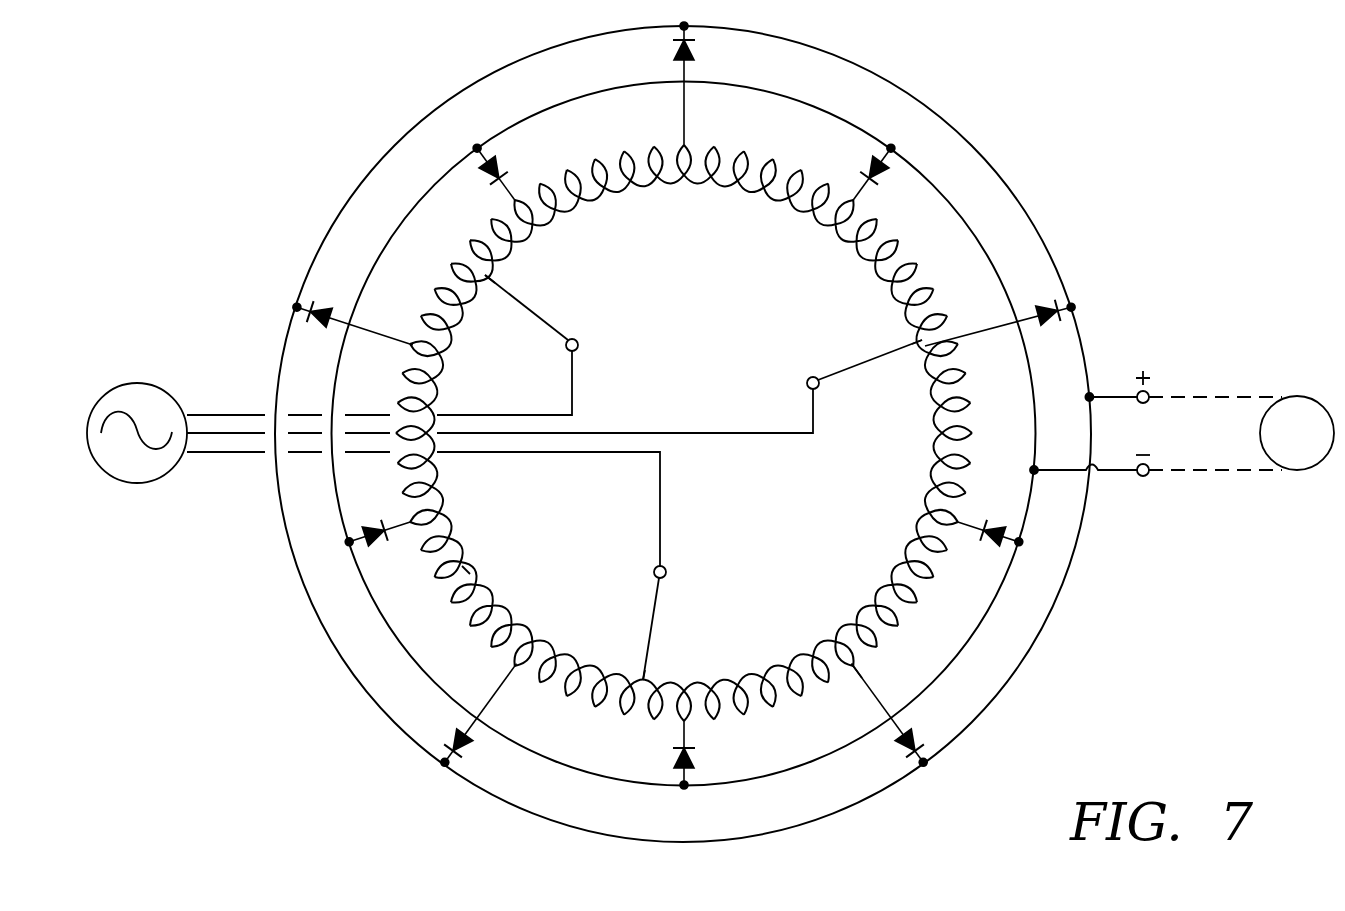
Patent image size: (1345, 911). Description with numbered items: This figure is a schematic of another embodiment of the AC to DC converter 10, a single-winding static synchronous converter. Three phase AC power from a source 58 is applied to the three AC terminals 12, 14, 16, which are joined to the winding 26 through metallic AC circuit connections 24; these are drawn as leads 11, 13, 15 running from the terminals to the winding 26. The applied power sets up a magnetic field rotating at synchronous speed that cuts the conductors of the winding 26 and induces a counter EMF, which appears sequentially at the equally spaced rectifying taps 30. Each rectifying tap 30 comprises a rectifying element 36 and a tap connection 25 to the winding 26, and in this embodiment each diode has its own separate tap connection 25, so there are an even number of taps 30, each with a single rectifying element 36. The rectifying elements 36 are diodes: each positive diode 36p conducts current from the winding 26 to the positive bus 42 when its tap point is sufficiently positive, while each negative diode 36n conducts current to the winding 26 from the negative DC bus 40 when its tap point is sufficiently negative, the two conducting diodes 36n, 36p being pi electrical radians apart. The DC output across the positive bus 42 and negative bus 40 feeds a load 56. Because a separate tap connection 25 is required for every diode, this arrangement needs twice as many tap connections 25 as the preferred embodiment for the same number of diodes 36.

The AC to DC converter 10 is at (455, 818).
The first tap lead 11 is at (545, 312).
The AC terminal 12 is at (580, 345).
The second tap lead 13 is at (870, 345).
The AC terminal 14 is at (820, 390).
The third tap lead 15 is at (645, 630).
The AC terminal 16 is at (656, 568).
The AC circuit connection 24 is at (487, 278).
The tap connection 25 is at (858, 668).
The winding 26 is at (470, 574).
The rectifying tap 30 is at (700, 112).
The rectifying element 36 is at (460, 738).
The positive diode 36p is at (698, 50).
The negative diode 36n is at (497, 166).
The negative DC bus 40 is at (1113, 472).
The positive DC bus 42 is at (1087, 345).
The load 56 is at (1282, 400).
The AC source 58 is at (127, 385).